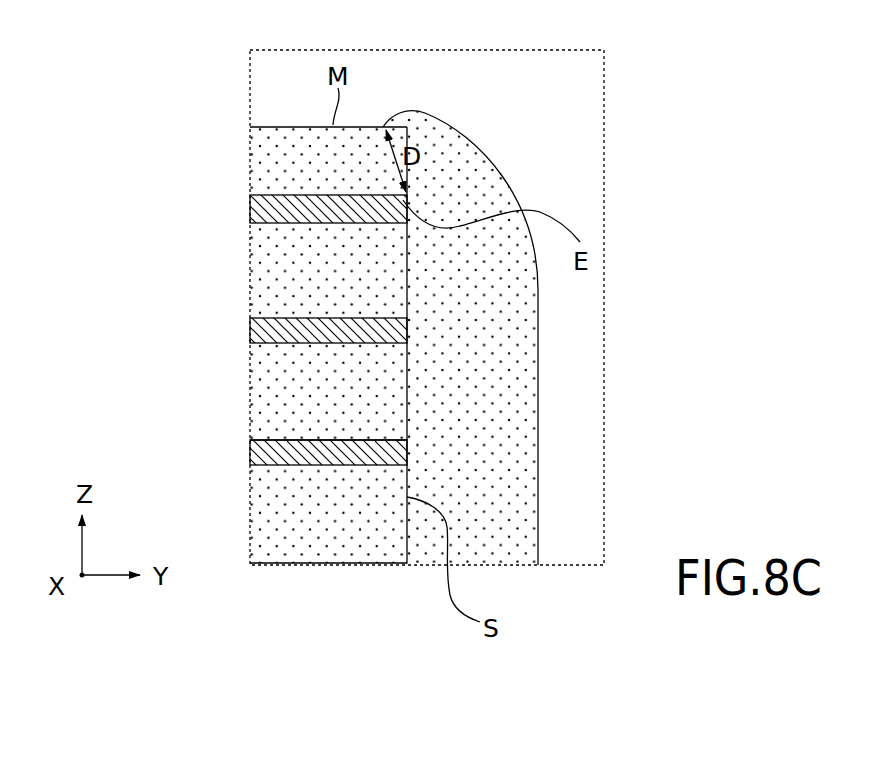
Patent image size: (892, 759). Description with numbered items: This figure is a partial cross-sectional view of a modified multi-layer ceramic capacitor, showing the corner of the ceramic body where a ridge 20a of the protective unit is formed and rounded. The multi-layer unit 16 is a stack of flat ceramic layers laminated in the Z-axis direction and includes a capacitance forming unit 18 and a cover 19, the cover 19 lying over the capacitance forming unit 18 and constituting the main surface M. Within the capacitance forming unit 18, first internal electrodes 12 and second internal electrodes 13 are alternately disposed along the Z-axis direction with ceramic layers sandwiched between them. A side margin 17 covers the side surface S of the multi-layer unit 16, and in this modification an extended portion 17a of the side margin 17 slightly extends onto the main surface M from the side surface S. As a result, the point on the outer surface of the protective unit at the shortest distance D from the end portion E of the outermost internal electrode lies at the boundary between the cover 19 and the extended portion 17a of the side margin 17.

The first internal electrode 12 is at (254, 204).
The second internal electrode 13 is at (254, 324).
The multi-layer unit 16 is at (287, 286).
The side margin 17 is at (484, 493).
The extended portion 17a is at (383, 96).
The capacitance forming unit 18 is at (371, 451).
The cover 19 is at (364, 171).
The ridge 20a is at (523, 126).